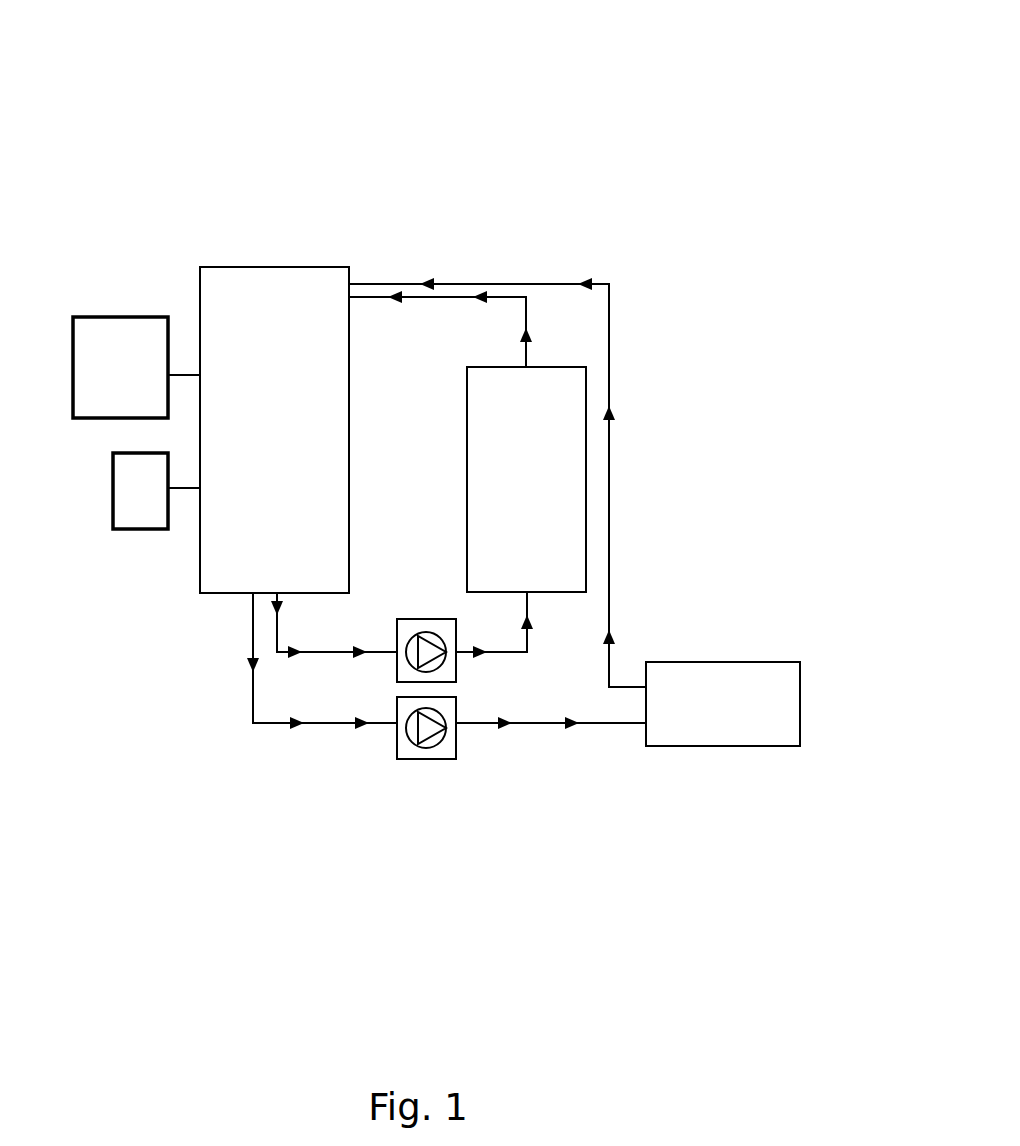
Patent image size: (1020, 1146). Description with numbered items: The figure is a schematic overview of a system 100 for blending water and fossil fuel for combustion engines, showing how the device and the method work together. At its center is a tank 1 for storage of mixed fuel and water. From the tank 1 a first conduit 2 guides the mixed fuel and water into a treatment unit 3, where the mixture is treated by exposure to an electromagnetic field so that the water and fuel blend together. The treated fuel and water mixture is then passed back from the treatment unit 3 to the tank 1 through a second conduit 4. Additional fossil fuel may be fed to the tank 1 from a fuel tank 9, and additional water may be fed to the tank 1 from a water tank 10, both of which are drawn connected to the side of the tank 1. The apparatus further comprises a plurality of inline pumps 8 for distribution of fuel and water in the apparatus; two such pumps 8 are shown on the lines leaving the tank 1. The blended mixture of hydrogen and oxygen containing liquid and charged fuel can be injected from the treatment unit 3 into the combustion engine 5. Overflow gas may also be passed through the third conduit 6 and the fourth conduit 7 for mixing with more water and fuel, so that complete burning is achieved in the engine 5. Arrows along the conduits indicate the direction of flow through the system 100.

The tank 1 is at (257, 327).
The first conduit 2 is at (318, 652).
The treatment unit 3 is at (523, 388).
The second conduit 4 is at (460, 297).
The combustion engine 5 is at (745, 690).
The third conduit 6 is at (270, 723).
The fourth conduit 7 is at (408, 284).
The inline pump 8 is at (443, 677).
The fuel tank 9 is at (136, 367).
The water tank 10 is at (156, 491).
The system 100 is at (692, 305).